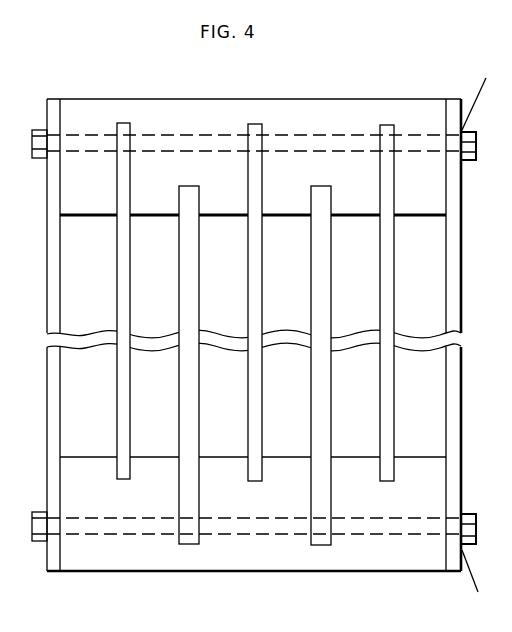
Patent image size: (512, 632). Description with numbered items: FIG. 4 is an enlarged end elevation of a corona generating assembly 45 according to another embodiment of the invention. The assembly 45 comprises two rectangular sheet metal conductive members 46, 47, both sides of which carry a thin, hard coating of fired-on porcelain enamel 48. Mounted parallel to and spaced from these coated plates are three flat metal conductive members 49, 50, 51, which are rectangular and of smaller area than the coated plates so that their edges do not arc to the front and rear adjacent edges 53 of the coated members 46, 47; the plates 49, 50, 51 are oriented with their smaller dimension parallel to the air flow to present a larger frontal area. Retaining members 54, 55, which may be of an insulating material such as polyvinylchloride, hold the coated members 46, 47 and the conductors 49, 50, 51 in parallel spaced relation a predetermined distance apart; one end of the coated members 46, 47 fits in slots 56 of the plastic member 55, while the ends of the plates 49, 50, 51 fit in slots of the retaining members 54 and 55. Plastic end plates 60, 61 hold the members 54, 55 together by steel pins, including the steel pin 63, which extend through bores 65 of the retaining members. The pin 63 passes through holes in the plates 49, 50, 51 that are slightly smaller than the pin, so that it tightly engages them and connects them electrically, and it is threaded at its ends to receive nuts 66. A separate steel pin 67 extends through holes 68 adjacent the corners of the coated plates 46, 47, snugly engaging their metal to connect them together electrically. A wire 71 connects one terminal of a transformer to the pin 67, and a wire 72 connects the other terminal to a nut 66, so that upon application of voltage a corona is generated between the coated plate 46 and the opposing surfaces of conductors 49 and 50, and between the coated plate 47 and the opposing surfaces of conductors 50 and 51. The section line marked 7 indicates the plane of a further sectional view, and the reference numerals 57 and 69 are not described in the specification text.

The section line 7- 7 is at (413, 405).
The corona generating assembly 45 is at (337, 80).
The conductive member 46 is at (197, 288).
The conductive member 47 is at (329, 286).
The porcelain enamel 48 is at (200, 236).
The conductive member 49 is at (128, 190).
The conductive member 50 is at (260, 190).
The conductive member 51 is at (393, 190).
The front and rear adjacent edges 53 is at (511, 304).
The retaining member 54 is at (217, 460).
The retaining member 55 is at (411, 207).
The slots 56 is at (200, 208).
The posts 57 is at (123, 123).
The end plate 60 is at (457, 272).
The end plate 61 is at (54, 261).
The steel pin 63 is at (417, 135).
The bores 65 is at (186, 137).
The nuts 66 is at (468, 163).
The steel pin 67 is at (393, 534).
The holes 68 is at (185, 526).
The nut 69 is at (468, 515).
The wire 71 is at (470, 582).
The wire 72 is at (481, 84).